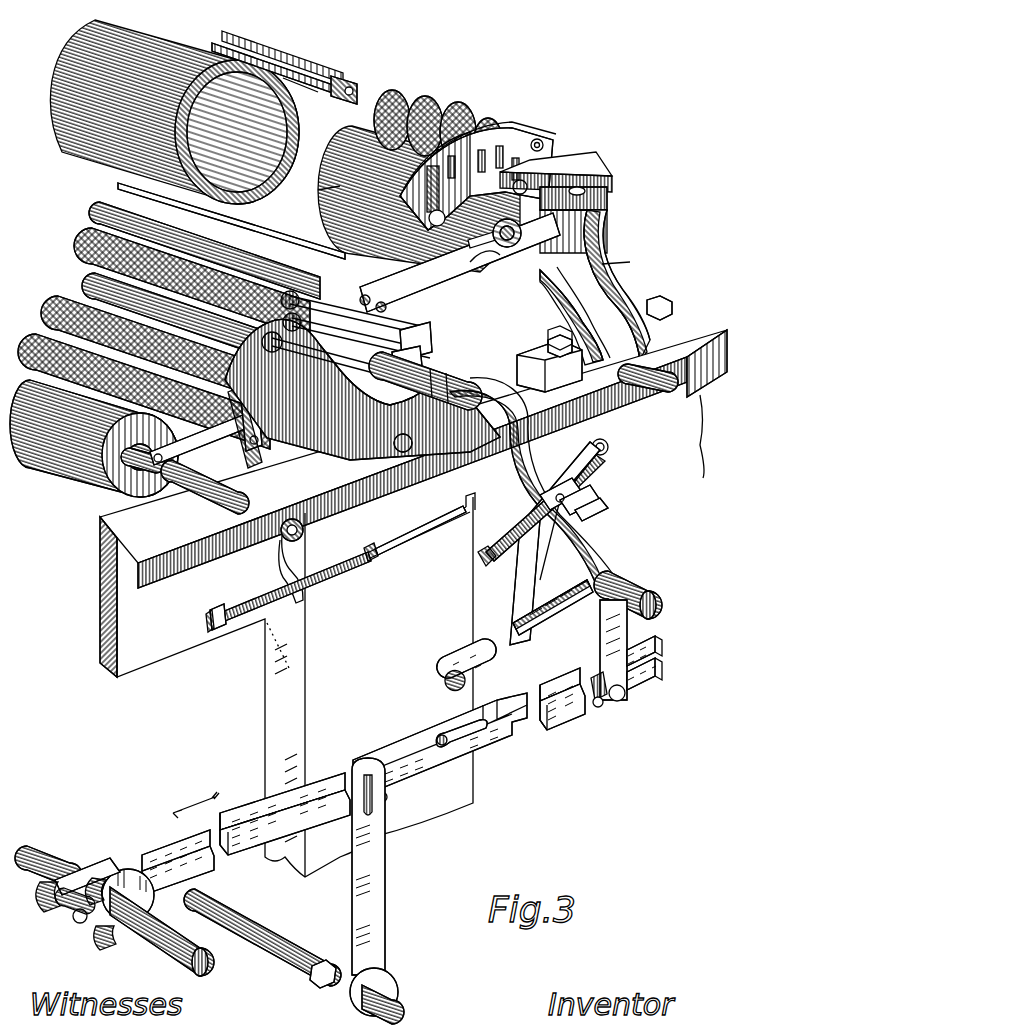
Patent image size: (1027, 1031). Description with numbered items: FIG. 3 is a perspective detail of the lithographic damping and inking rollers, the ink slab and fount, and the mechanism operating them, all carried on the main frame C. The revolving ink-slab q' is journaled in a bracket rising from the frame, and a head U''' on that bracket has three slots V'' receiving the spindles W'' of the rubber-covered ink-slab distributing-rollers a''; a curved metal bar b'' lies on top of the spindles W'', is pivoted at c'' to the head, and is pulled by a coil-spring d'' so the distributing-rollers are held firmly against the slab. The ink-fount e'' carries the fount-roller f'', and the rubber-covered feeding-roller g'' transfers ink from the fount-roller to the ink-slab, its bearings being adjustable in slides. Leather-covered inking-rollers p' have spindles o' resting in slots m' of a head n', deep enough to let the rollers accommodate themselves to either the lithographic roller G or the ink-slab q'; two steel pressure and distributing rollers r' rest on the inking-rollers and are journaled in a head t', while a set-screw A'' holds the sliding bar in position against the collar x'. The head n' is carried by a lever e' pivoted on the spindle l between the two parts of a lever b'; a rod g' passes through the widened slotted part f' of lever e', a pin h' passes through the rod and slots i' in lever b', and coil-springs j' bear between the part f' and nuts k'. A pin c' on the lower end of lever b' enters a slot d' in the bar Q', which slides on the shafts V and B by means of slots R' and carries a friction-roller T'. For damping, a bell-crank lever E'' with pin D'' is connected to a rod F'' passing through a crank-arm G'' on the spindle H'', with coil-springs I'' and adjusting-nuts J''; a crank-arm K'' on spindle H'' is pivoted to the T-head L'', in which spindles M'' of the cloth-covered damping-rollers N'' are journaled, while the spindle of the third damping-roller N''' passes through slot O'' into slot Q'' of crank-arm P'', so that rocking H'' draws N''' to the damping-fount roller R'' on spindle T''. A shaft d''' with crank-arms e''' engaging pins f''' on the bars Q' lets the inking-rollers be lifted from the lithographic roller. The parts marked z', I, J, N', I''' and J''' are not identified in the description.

The revolving ink-slab q' is at (174, 112).
The rubber-covered feeding-roller g'' is at (277, 55).
The fount-roller f'' is at (321, 62).
The ink-fount e'' is at (362, 77).
The cylinder z' is at (412, 199).
The coil-spring d'' is at (315, 177).
The ink-slab distributing-rollers a'' is at (438, 118).
The spindles W'' is at (488, 162).
The curved metal bar b'' is at (481, 157).
The pivot c'' is at (567, 135).
The head U''' is at (577, 170).
The slots V'' is at (601, 213).
The collar x' is at (624, 285).
The set-screw A'' is at (511, 260).
The main frame C is at (413, 603).
The steel pressure and distributing rollers r' is at (186, 249).
The leather-covered inking-rollers p' is at (178, 281).
The lithographic roller G is at (179, 320).
The cloth-covered damping-rollers N'' is at (145, 345).
The third damping-roller N''' is at (135, 385).
The slot O'' is at (94, 438).
The slot Q'' is at (95, 484).
The damping-fount roller R'' is at (115, 488).
The crank-arm K'' is at (215, 487).
The frame top I is at (296, 460).
The crank-arm P'' is at (158, 480).
The spindle T'' is at (165, 488).
The T-head L'' is at (362, 389).
The pin J is at (412, 445).
The head t' is at (368, 335).
The rod N' is at (485, 325).
The slots m' is at (438, 359).
The spindles o' is at (430, 381).
The lever e' is at (535, 465).
The head n' is at (651, 362).
The slots i' is at (713, 483).
The rod g' is at (601, 468).
The nuts k' is at (578, 533).
The coil-springs j' is at (574, 520).
The widened slotted part f' is at (592, 501).
The pin h' is at (623, 523).
The bell-crank lever E'' is at (637, 556).
The spindle l is at (658, 604).
The lever b' is at (648, 650).
The slot d' is at (614, 704).
The pin c' is at (562, 710).
The pin D'' is at (456, 675).
The spindles M'' is at (241, 539).
The spindle H'' is at (408, 529).
The adjusting-nuts J'' is at (420, 528).
The coil-springs I'' is at (308, 582).
The screw I''' is at (248, 639).
The nut J''' is at (209, 646).
The crank-arm G'' is at (329, 622).
The rod F'' is at (459, 560).
The bars Q' is at (249, 806).
The slots R' is at (454, 745).
The pressure-roller shaft V is at (481, 790).
The pin f''' is at (412, 819).
The crank-arm e''' is at (386, 891).
The shaft d''' is at (262, 938).
The shaft B is at (67, 849).
The friction-roller T' is at (73, 917).